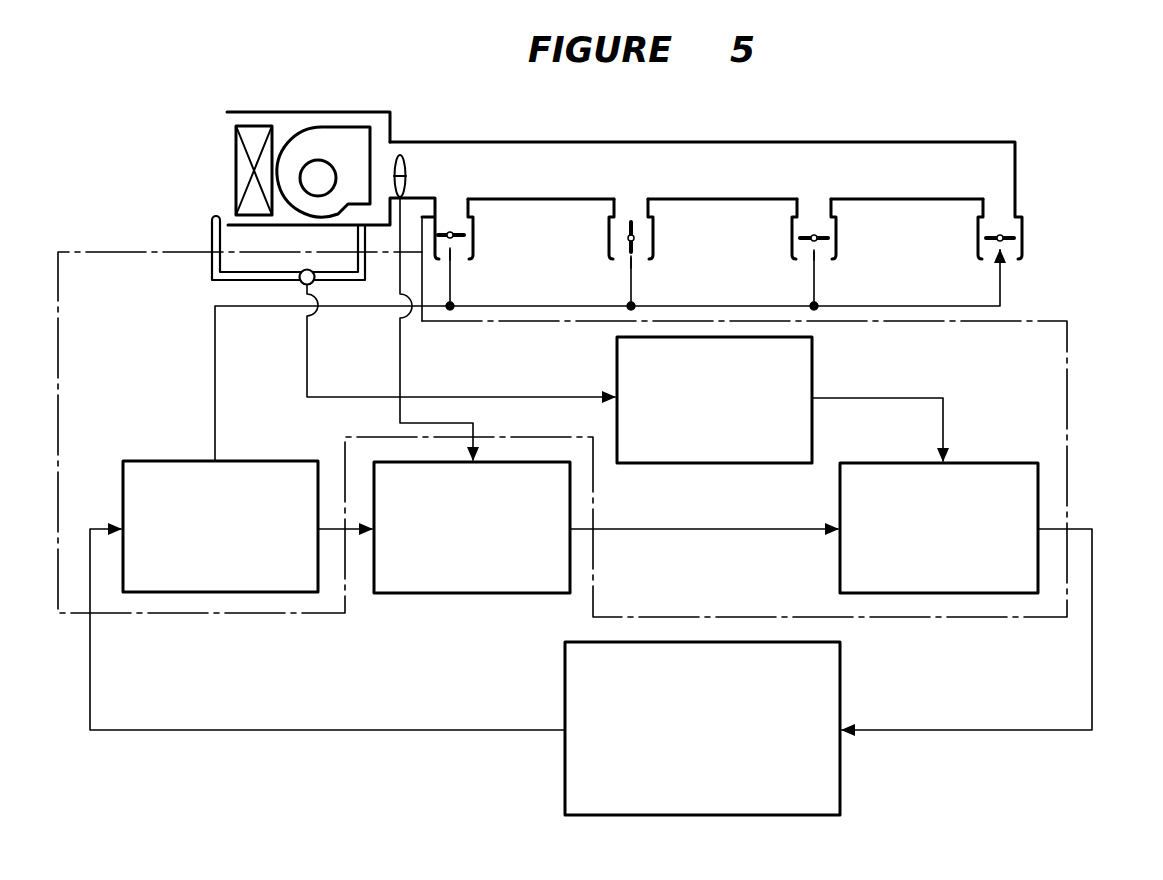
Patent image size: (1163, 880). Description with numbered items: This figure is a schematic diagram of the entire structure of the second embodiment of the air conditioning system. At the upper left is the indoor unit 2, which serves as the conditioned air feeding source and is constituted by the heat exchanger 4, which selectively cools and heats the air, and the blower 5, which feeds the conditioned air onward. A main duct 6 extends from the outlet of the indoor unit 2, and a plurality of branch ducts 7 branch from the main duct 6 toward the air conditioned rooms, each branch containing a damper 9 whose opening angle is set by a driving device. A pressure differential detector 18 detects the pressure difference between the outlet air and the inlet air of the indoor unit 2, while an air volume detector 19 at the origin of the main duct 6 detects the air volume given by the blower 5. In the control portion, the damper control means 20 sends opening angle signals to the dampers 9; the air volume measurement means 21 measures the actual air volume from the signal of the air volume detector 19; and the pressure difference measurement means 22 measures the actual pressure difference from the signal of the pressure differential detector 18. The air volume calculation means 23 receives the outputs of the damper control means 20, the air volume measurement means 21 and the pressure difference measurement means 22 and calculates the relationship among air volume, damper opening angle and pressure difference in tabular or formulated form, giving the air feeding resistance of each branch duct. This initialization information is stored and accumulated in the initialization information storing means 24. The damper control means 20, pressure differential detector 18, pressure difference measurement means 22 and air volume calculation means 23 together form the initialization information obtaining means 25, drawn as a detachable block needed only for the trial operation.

The indoor unit 2 is at (357, 108).
The heat exchanger 4 is at (257, 126).
The blower 5 is at (320, 127).
The main duct 6 is at (800, 142).
The branch ducts 7 is at (473, 207).
The dampers 9 is at (475, 240).
The pressure differential detector 18 is at (305, 286).
The air volume detector 19 is at (403, 156).
The damper control means 20 is at (222, 592).
The air volume measurement means 21 is at (446, 593).
The pressure difference measurement means 22 is at (812, 348).
The air volume calculation means 23 is at (938, 593).
The initialization information storing means 24 is at (840, 778).
The initialization information obtaining means 25 is at (1067, 398).